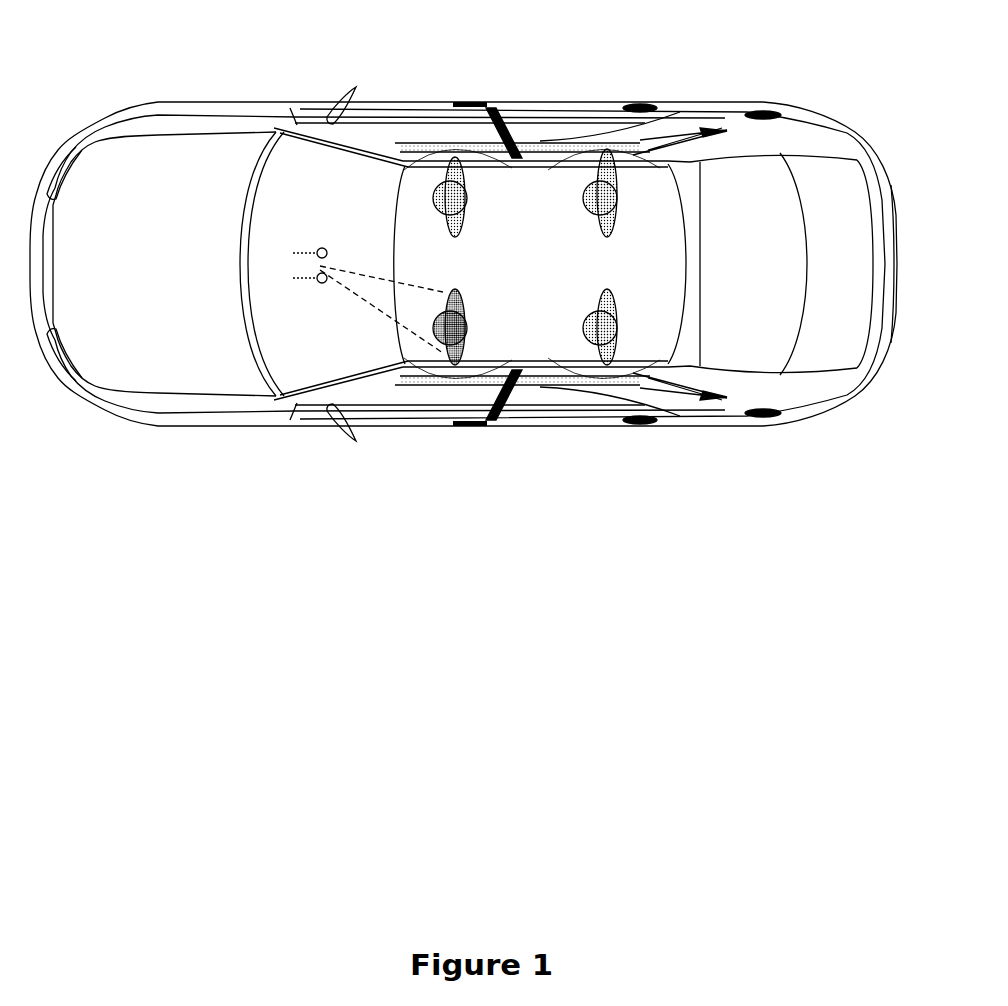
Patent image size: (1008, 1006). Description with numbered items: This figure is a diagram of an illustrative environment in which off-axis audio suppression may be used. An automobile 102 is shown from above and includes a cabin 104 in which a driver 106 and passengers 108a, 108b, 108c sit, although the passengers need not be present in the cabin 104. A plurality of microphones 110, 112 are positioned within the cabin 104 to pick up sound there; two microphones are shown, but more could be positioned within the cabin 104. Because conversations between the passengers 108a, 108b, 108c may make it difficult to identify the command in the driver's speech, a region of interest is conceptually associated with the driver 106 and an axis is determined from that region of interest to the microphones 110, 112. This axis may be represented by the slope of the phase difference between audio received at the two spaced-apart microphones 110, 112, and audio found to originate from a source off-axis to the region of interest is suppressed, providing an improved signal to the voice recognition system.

The automobile 102 is at (157, 100).
The cabin 104 is at (509, 266).
The driver 106 is at (458, 366).
The passenger 108a is at (462, 160).
The passenger 108b is at (600, 150).
The passenger 108c is at (603, 367).
The microphone 110 is at (313, 288).
The microphone 112 is at (296, 248).